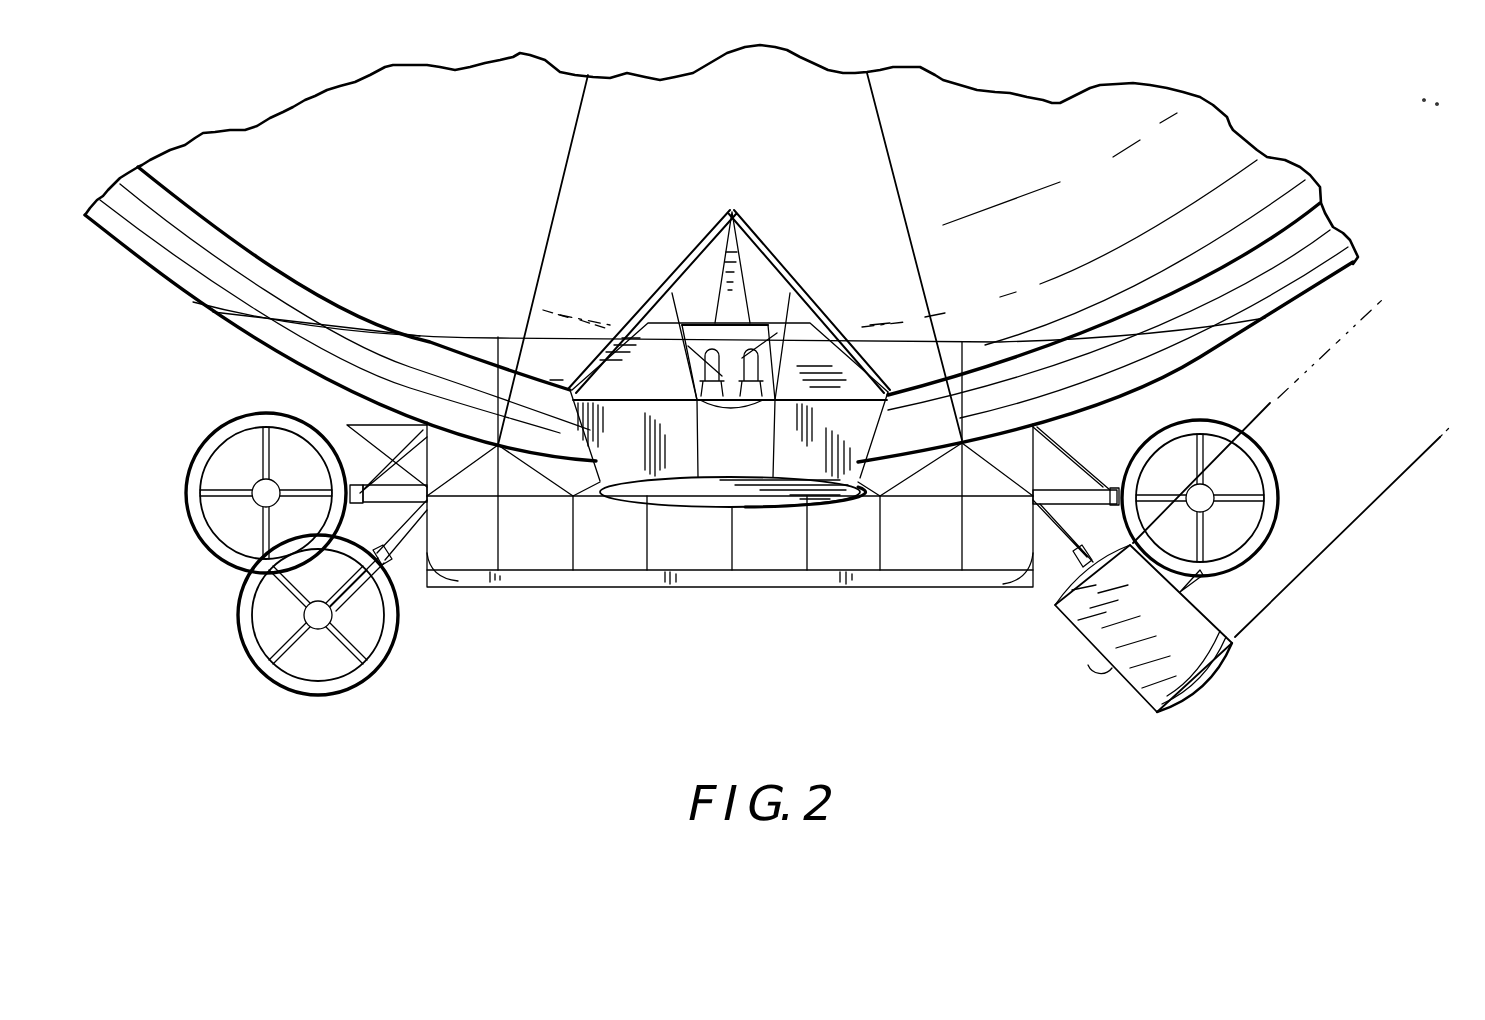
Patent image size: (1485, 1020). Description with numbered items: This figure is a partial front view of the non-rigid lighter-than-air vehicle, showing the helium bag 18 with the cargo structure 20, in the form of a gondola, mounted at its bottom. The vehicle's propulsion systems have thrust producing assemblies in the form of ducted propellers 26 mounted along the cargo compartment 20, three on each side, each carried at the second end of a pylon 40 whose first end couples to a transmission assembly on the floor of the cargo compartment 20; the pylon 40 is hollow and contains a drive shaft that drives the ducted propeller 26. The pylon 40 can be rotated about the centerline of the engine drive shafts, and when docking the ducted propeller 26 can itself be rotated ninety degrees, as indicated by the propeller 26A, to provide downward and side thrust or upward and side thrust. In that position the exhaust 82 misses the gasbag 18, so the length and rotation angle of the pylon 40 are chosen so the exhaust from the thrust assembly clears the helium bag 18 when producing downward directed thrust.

The helium bag 18 is at (153, 280).
The cargo structure 20 is at (642, 588).
The ducted propeller 26 is at (387, 663).
The ducted propeller rotated ninety degrees 26A is at (1158, 713).
The pylon 40 is at (1060, 548).
The exhaust 82 is at (1327, 553).